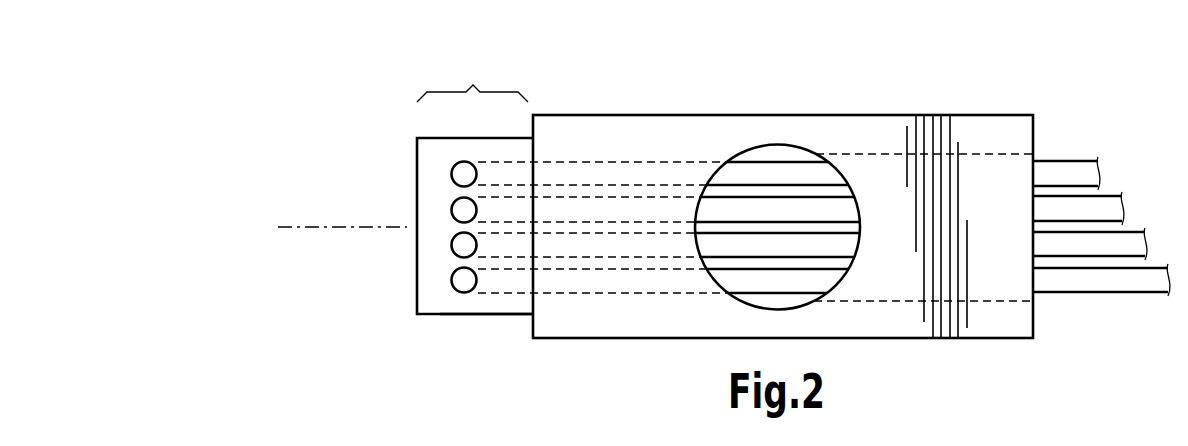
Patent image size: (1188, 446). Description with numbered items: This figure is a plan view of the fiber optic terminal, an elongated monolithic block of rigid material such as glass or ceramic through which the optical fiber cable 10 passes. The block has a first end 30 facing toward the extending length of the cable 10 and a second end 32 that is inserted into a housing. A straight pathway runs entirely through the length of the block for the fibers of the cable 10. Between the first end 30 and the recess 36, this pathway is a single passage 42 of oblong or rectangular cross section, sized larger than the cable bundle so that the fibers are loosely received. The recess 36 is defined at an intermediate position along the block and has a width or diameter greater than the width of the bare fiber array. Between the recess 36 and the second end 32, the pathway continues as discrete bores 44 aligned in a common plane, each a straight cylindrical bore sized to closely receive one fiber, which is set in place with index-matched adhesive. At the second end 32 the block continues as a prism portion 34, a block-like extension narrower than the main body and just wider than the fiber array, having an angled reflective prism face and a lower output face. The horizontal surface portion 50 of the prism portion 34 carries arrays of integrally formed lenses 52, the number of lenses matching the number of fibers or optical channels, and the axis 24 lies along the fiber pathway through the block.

The optical fiber cable 10 is at (1072, 160).
The optical axis 24 is at (313, 227).
The first end 30 is at (1033, 321).
The second end 32 is at (417, 296).
The prism portion 34 is at (473, 86).
The recess 36 is at (790, 303).
The single passage 42 is at (994, 300).
The discrete bores 44 is at (598, 162).
The horizontal surface portion 50 is at (498, 305).
The integrally formed lenses 52 is at (452, 174).